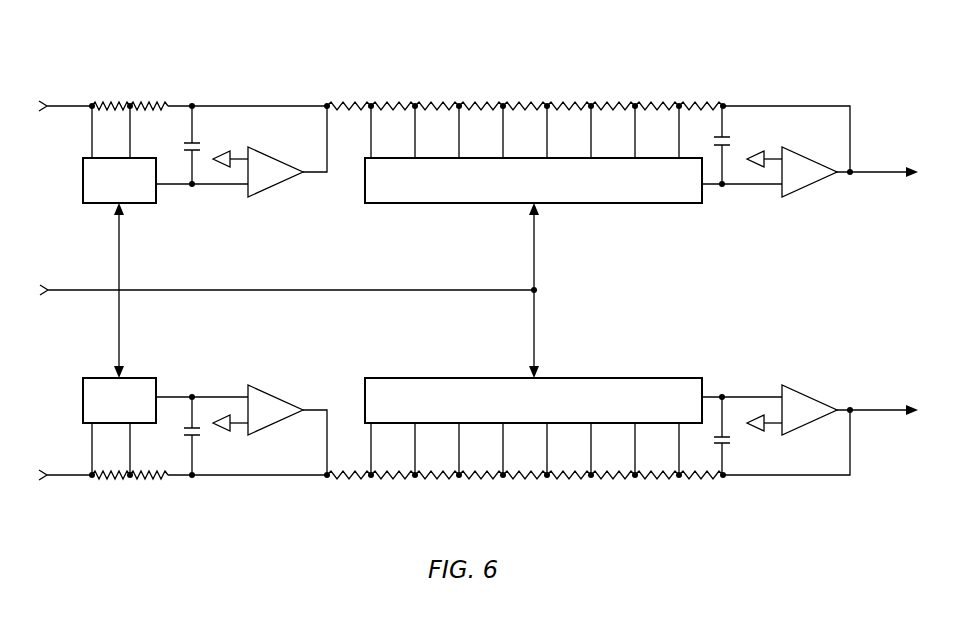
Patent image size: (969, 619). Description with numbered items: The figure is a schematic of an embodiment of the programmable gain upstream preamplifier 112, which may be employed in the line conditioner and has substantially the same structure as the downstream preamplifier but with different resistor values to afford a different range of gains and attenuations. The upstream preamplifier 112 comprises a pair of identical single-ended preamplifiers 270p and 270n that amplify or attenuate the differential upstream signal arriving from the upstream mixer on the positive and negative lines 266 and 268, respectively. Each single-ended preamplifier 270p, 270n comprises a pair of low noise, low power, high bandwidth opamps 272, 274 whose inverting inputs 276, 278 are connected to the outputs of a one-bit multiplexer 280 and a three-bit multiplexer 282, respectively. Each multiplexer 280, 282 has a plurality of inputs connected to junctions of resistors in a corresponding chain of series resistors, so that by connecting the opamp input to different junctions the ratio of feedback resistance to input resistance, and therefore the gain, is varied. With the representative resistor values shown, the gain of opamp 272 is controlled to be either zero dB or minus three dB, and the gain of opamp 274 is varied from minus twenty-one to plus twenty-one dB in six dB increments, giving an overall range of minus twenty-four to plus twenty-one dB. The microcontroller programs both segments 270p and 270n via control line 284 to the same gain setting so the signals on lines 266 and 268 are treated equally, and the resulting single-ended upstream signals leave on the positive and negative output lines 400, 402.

The upstream preamplifier 112 is at (723, 55).
The positive line 266 is at (63, 104).
The negative line 268 is at (67, 476).
The single-ended preamplifier 270p is at (476, 71).
The single-ended preamplifier 270n is at (480, 511).
The opamp 272 is at (277, 187).
The opamp 274 is at (815, 178).
The inverting input 276 is at (209, 184).
The inverting input 278 is at (712, 188).
The one-bit multiplexer 280 is at (82, 176).
The three-bit multiplexer 282 is at (655, 205).
The control line 284 is at (82, 293).
The positive output line 400 is at (868, 168).
The negative output line 402 is at (878, 408).